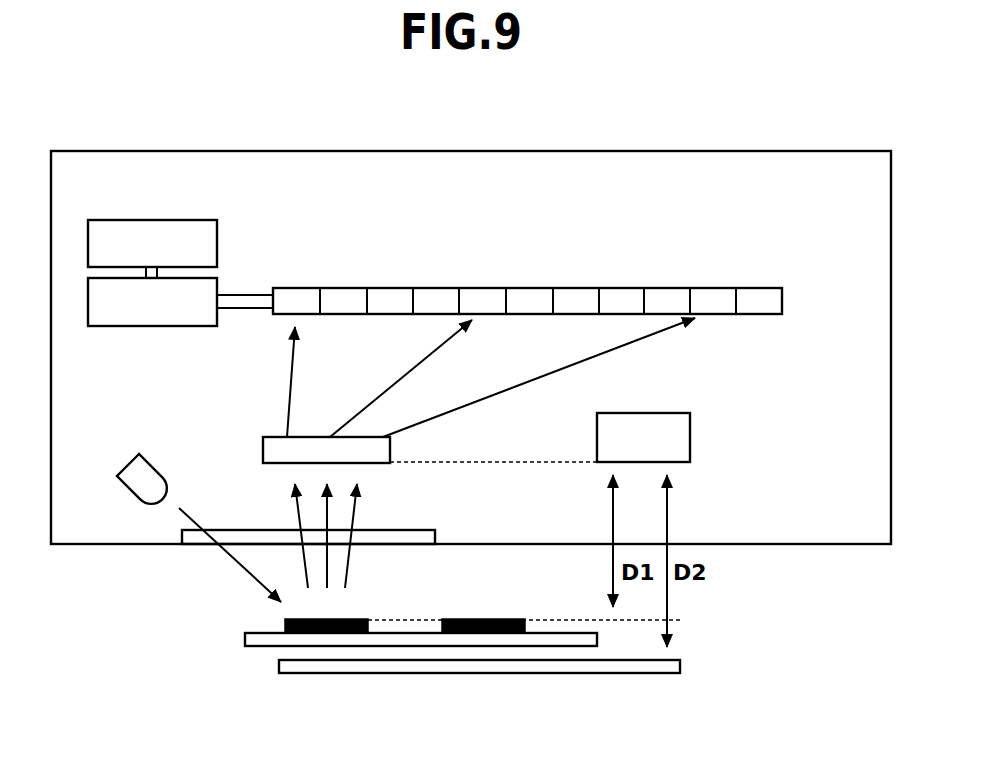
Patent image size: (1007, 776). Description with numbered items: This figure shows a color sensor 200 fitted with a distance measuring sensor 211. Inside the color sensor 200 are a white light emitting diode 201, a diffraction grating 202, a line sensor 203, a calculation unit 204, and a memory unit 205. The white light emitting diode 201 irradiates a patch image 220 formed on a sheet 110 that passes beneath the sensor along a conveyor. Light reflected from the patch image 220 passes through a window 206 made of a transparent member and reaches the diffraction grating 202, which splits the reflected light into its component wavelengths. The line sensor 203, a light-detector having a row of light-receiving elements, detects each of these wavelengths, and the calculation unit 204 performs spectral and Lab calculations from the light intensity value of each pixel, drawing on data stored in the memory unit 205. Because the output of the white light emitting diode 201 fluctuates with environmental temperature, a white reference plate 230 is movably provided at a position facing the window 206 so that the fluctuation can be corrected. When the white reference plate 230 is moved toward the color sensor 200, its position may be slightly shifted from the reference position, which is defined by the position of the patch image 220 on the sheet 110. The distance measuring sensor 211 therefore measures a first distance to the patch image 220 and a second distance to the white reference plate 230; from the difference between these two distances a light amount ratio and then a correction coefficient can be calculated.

The color sensor 200 is at (604, 151).
The white light emitting diode 201 is at (158, 460).
The diffraction grating 202 is at (390, 446).
The line sensor 203 is at (297, 288).
The calculation unit 204 is at (152, 327).
The memory unit 205 is at (155, 220).
The window 206 is at (410, 530).
The distance measuring sensor 211 is at (690, 433).
The patch image 220 is at (285, 625).
The sheet 110 is at (250, 647).
The white reference plate 230 is at (492, 673).